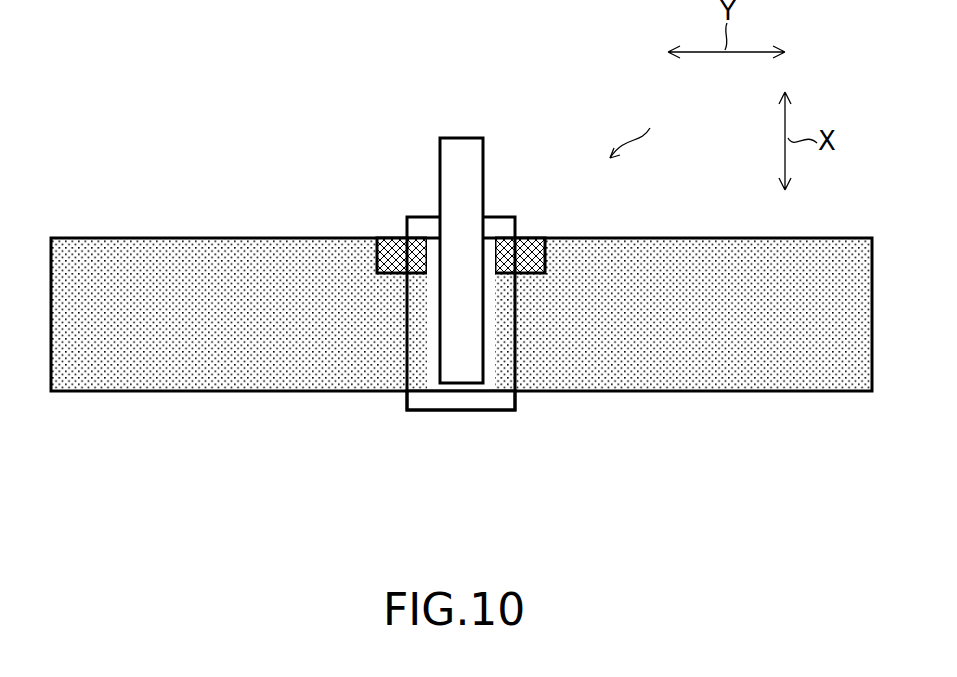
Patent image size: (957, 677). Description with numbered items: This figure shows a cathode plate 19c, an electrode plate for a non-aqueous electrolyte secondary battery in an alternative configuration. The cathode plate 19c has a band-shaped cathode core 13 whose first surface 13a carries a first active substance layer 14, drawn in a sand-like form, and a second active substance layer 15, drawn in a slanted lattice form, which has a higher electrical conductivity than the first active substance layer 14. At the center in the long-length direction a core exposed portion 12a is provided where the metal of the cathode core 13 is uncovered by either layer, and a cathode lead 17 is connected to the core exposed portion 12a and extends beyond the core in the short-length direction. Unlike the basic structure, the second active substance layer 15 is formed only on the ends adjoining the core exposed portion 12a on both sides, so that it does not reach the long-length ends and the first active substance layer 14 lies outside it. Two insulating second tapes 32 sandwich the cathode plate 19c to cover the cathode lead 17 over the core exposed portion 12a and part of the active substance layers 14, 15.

The core exposed portion 12a is at (488, 248).
The cathode core 13 is at (490, 373).
The first surface 13a is at (430, 248).
The first active substance layer 14 is at (205, 262).
The second active substance layer 15 is at (388, 238).
The cathode lead 17 is at (461, 137).
The cathode plate 19c is at (642, 131).
The second tape 32 is at (432, 412).